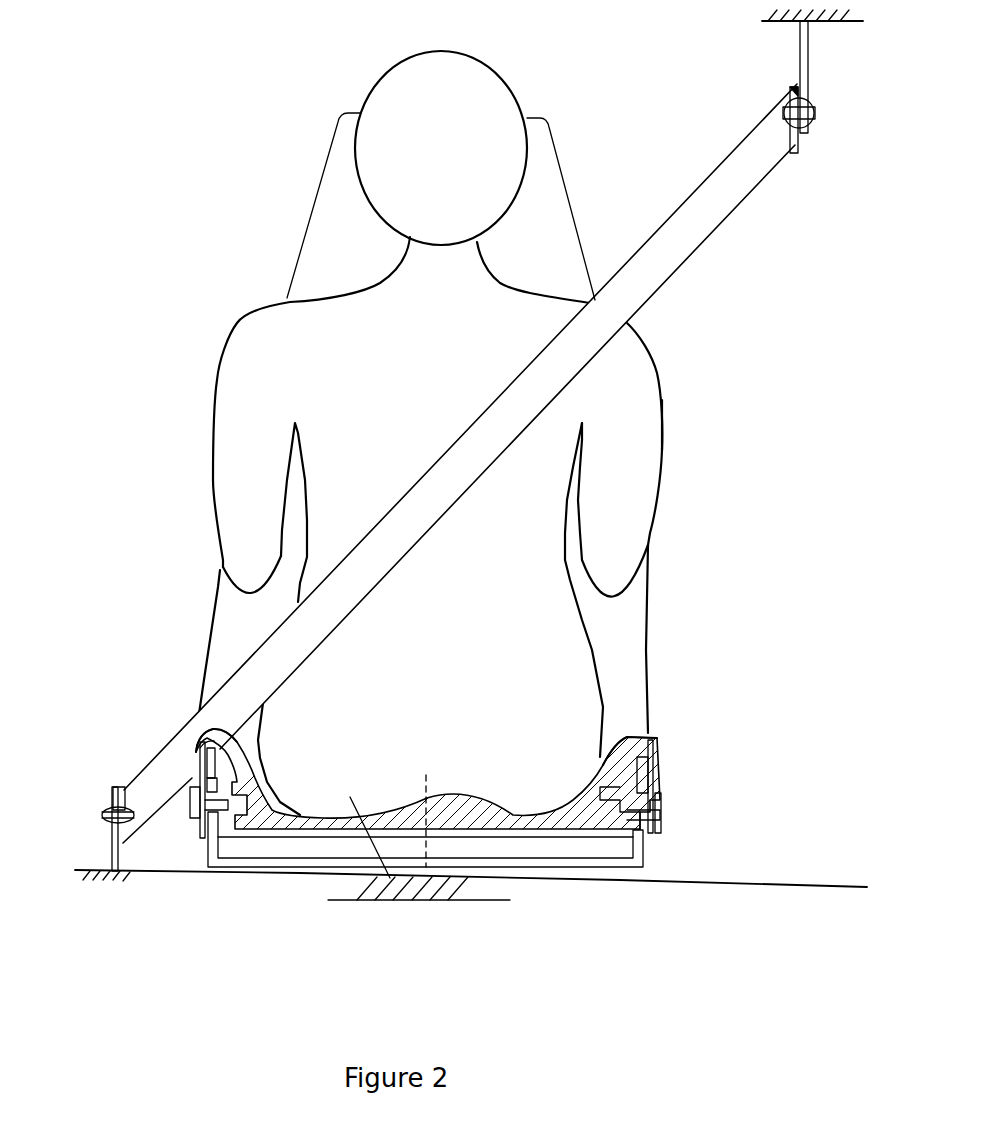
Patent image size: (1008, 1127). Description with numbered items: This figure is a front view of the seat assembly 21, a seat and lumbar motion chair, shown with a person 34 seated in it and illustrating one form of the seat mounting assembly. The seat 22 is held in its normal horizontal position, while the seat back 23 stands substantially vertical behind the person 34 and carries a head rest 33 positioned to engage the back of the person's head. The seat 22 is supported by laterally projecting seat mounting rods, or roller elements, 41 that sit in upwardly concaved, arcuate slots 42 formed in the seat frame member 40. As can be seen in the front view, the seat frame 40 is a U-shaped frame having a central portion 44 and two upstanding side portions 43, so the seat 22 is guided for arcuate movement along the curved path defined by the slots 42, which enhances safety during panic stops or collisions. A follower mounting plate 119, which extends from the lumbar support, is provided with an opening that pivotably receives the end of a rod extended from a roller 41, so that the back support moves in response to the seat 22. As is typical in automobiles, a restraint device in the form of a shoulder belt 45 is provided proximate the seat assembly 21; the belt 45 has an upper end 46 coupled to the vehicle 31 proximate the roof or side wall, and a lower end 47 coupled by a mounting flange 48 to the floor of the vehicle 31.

The seat assembly 21 is at (702, 692).
The seat 22 is at (213, 730).
The seat back 23 is at (570, 285).
The vehicle 31 is at (813, 22).
The head rest 33 is at (560, 168).
The person 34 is at (665, 387).
The seat frame member 40 is at (727, 822).
The seat mounting rods 41 is at (200, 767).
The arcuate slot 42 is at (200, 777).
The side portions 43 is at (208, 850).
The central portion 44 is at (498, 867).
The shoulder belt 45 is at (742, 143).
The end 46 is at (750, 163).
The lower end 47 is at (137, 773).
The mounting flange 48 is at (108, 848).
The follower mounting plate 119 is at (655, 768).